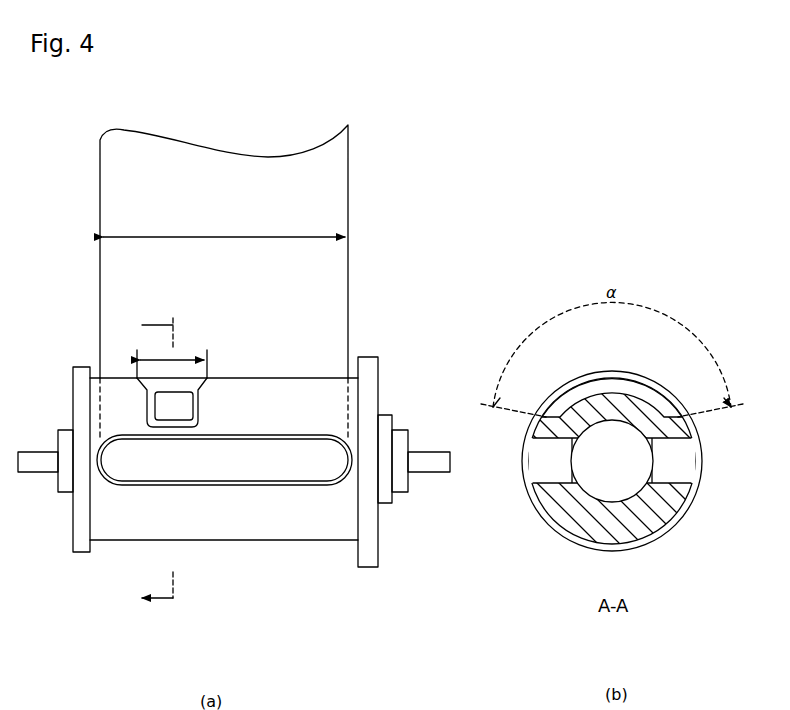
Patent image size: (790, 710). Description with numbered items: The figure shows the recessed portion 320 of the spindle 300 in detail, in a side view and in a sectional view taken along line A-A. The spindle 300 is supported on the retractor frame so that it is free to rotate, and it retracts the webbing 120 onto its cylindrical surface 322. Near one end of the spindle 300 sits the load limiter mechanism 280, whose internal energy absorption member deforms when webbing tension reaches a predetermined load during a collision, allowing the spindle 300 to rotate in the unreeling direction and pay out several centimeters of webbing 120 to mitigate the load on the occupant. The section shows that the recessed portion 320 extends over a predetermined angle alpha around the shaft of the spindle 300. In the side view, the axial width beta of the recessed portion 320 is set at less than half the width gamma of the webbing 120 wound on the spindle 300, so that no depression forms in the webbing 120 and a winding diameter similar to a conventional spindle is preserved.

The webbing 120 is at (337, 187).
The load limiter mechanism 280 is at (370, 364).
The spindle 300 is at (240, 560).
The recessed portion 320 is at (202, 399).
The cylindrical surface 322 is at (305, 400).